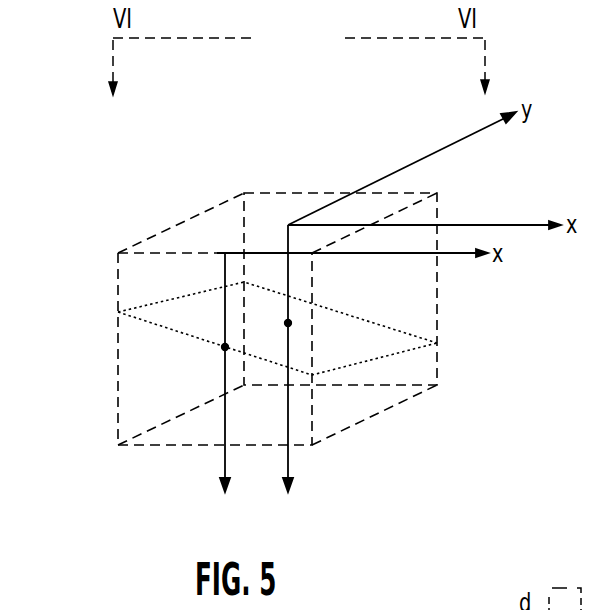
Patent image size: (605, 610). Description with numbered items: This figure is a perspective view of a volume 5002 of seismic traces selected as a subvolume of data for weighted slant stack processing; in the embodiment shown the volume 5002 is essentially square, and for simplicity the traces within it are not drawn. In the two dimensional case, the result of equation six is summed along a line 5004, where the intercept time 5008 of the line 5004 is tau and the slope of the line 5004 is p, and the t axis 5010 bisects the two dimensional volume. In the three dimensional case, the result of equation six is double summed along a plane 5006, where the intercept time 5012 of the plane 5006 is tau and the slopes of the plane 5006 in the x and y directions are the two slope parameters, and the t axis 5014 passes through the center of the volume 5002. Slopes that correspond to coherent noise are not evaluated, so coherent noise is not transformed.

The volume 5002 is at (312, 164).
The line 5004 is at (157, 302).
The plane 5006 is at (387, 350).
The intercept time 5008 is at (225, 347).
The t axis 5010 is at (219, 468).
The intercept time 5012 is at (288, 323).
The t axis 5014 is at (291, 466).